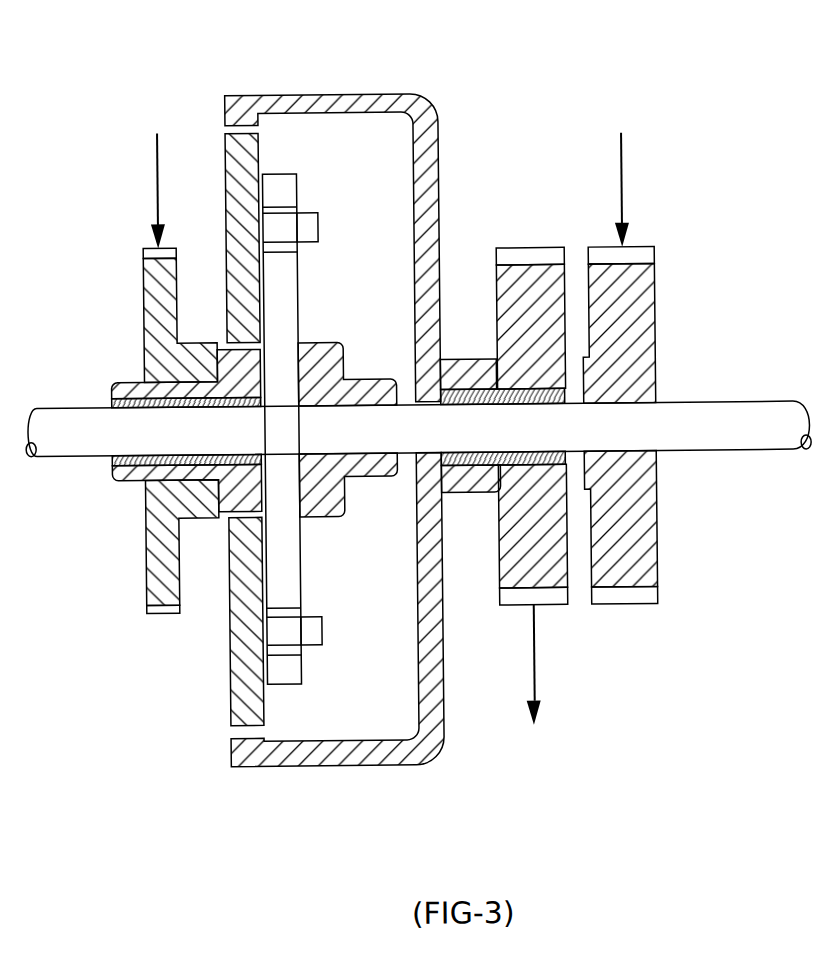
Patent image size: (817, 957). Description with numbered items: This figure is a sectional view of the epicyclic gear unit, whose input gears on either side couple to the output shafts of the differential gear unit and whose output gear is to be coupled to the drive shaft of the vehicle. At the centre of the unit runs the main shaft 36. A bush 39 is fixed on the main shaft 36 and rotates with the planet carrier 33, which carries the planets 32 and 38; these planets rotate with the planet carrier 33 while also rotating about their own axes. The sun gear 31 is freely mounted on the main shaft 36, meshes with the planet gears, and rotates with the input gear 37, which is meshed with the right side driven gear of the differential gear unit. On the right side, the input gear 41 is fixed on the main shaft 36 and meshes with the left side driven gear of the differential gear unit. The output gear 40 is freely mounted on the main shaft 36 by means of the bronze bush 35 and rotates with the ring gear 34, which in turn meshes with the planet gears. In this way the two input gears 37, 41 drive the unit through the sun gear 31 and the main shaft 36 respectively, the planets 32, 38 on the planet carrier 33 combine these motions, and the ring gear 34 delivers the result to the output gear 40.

The sun gear 31 is at (203, 375).
The planet gear 32 is at (216, 318).
The planet carrier 33 is at (282, 160).
The ring gear 34 is at (359, 84).
The bronze bush 35 is at (464, 378).
The main shaft 36 is at (693, 394).
The input gear 37 is at (135, 585).
The planet gear 38 is at (219, 658).
The bush 39 is at (372, 486).
The output gear 40 is at (507, 616).
The input gear 41 is at (624, 616).